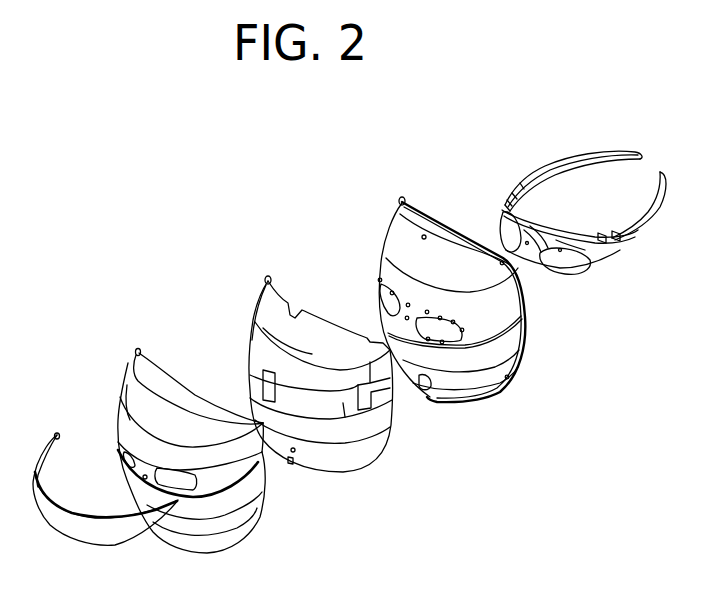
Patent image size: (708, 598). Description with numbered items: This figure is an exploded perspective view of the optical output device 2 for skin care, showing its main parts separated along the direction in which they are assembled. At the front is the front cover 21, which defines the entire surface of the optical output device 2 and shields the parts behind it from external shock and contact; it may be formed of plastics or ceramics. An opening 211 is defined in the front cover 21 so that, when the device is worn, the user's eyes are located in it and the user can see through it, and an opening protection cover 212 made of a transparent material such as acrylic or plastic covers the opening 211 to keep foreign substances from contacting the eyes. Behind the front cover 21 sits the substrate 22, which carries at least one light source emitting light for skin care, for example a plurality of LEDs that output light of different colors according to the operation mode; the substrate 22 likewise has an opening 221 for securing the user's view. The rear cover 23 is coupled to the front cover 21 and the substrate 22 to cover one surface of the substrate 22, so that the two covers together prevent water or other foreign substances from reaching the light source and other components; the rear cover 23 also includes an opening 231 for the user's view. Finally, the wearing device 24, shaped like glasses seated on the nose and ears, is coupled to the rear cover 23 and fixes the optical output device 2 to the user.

The optical output device 2 is at (247, 229).
The front cover 21 is at (127, 374).
The opening 211 is at (198, 480).
The opening protection cover 212 is at (33, 475).
The substrate 22 is at (255, 338).
The opening 221 is at (344, 404).
The rear cover 23 is at (394, 238).
The opening 231 is at (453, 343).
The wearing device 24 is at (535, 180).